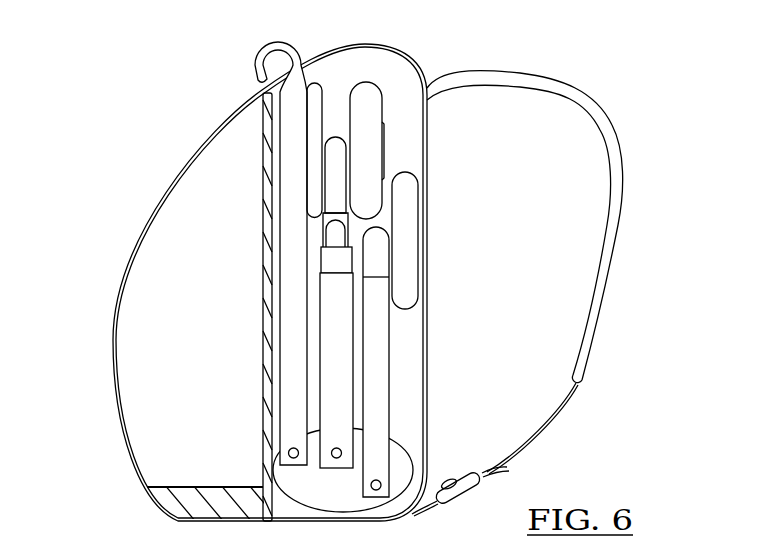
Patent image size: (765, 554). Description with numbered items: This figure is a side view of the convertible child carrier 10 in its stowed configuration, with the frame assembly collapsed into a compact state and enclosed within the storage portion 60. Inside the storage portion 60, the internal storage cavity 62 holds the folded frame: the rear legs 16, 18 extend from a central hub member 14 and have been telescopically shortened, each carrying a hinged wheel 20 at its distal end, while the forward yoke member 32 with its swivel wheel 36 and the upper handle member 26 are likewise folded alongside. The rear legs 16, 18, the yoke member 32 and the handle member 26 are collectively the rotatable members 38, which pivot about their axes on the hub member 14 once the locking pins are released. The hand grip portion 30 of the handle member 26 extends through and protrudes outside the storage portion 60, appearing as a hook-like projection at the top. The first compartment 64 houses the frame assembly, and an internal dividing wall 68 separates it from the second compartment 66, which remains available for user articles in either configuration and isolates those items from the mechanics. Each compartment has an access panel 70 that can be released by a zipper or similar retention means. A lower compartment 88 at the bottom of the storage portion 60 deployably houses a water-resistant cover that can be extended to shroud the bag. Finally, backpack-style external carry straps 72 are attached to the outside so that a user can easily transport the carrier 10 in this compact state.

The convertible child carrier 10 is at (661, 82).
The central hub member 14 is at (409, 440).
The right rear leg 16 is at (416, 234).
The left rear leg 18 is at (392, 332).
The hinged wheel 20 is at (420, 192).
The upper handle member 26 is at (262, 208).
The hand grip portion 30 is at (255, 60).
The forward yoke member 32 is at (312, 310).
The swivel wheel 36 is at (382, 100).
The rotatable members 38 is at (320, 393).
The storage portion 60 is at (412, 58).
The internal storage cavity 62 is at (222, 160).
The first compartment 64 is at (424, 470).
The second compartment 66 is at (153, 418).
The internal dividing wall 68 is at (255, 470).
The access panel 70 is at (84, 308).
The external carry straps 72 is at (627, 172).
The lower compartment 88 is at (180, 498).